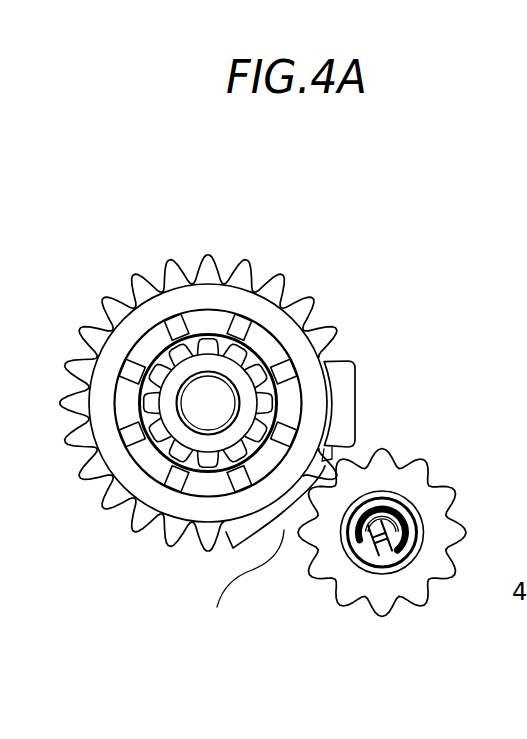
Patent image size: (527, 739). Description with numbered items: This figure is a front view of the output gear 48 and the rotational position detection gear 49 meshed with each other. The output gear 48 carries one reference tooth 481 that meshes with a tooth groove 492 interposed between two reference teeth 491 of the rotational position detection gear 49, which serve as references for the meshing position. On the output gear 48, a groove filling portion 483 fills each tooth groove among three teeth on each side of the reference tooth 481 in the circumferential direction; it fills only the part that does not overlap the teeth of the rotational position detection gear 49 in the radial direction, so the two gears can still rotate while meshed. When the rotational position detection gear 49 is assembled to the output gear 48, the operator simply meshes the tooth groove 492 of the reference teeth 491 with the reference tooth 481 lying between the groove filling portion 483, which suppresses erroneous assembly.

The output gear 48 is at (340, 308).
The reference tooth 481 is at (357, 455).
The groove filling portion 483 is at (354, 396).
The rotational position detection gear 49 is at (462, 483).
The reference teeth 491 is at (360, 492).
The tooth groove 492 is at (335, 530).